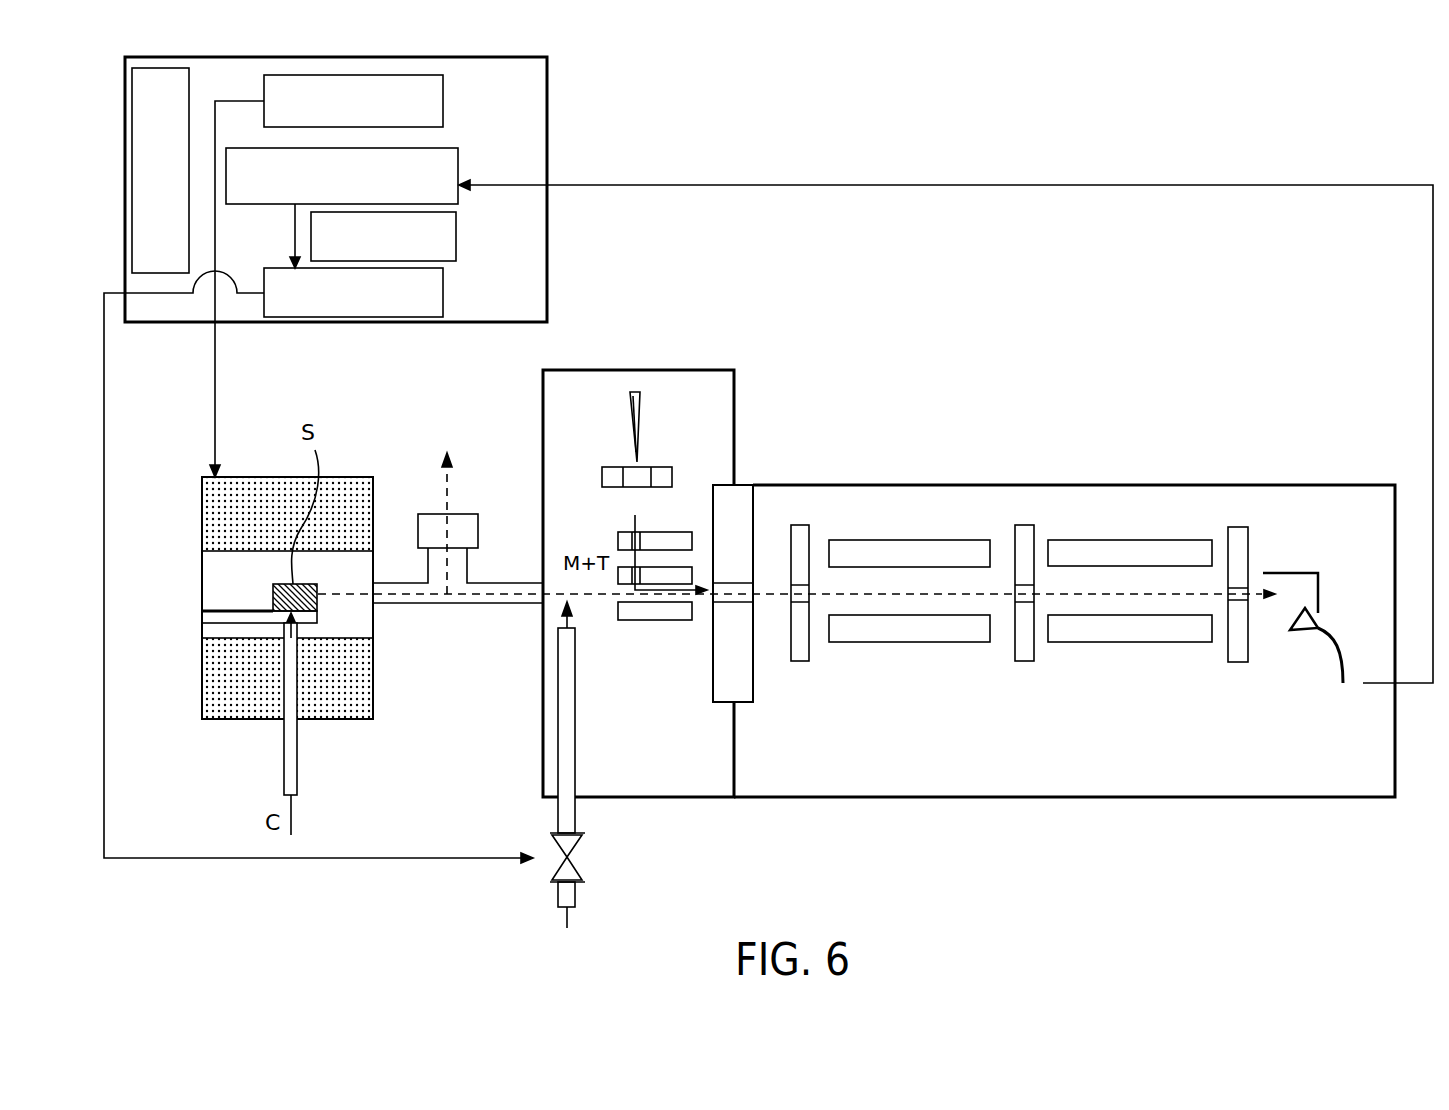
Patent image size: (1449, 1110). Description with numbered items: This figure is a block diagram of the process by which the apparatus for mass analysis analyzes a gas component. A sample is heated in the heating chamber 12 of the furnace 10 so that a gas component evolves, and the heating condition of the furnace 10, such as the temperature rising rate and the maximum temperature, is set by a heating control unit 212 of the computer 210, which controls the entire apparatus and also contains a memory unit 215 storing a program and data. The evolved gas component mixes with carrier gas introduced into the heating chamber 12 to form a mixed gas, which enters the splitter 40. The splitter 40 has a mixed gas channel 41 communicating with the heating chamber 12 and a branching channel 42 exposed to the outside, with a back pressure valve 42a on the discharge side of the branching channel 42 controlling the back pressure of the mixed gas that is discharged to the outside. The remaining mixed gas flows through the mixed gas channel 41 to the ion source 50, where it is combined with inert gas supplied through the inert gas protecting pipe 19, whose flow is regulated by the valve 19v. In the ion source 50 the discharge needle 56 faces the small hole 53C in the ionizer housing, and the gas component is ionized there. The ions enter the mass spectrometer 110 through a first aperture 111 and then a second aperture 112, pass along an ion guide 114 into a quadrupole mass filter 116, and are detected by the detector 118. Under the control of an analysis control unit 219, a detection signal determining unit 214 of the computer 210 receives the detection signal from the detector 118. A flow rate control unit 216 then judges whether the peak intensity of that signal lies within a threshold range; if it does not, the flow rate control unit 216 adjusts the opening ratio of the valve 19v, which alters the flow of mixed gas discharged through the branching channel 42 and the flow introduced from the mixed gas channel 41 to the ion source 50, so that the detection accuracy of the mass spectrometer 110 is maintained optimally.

The computer 210 is at (547, 105).
The heating control unit 212 is at (443, 120).
The detection signal determining unit 214 is at (458, 162).
The memory unit 215 is at (456, 230).
The flow rate control unit 216 is at (443, 285).
The analysis control unit 219 is at (189, 228).
The furnace 10 is at (202, 506).
The heating chamber 12 is at (202, 593).
The splitter 40 is at (458, 619).
The mixed gas channel 41 is at (440, 610).
The branching channel 42 is at (474, 523).
The back pressure valve 42a is at (466, 513).
The ion source 50 is at (675, 370).
The small hole 53C is at (630, 532).
The discharge needle 56 is at (643, 447).
The inert gas protecting pipe 19 is at (556, 820).
The valve 19v is at (580, 860).
The mass spectrometer 110 is at (1284, 333).
The first aperture 111 is at (735, 583).
The second aperture 112 is at (787, 602).
The ion guide 114 is at (902, 637).
The quadrupole mass filter 116 is at (1108, 640).
The detector 118 is at (1330, 683).